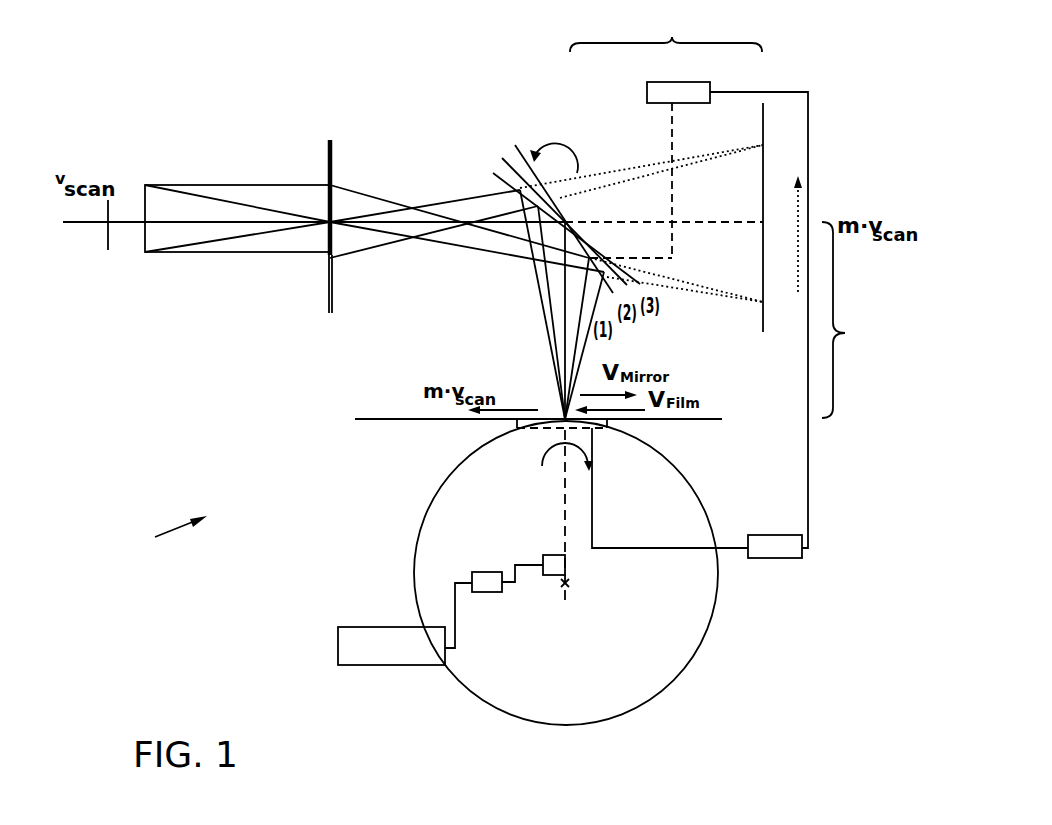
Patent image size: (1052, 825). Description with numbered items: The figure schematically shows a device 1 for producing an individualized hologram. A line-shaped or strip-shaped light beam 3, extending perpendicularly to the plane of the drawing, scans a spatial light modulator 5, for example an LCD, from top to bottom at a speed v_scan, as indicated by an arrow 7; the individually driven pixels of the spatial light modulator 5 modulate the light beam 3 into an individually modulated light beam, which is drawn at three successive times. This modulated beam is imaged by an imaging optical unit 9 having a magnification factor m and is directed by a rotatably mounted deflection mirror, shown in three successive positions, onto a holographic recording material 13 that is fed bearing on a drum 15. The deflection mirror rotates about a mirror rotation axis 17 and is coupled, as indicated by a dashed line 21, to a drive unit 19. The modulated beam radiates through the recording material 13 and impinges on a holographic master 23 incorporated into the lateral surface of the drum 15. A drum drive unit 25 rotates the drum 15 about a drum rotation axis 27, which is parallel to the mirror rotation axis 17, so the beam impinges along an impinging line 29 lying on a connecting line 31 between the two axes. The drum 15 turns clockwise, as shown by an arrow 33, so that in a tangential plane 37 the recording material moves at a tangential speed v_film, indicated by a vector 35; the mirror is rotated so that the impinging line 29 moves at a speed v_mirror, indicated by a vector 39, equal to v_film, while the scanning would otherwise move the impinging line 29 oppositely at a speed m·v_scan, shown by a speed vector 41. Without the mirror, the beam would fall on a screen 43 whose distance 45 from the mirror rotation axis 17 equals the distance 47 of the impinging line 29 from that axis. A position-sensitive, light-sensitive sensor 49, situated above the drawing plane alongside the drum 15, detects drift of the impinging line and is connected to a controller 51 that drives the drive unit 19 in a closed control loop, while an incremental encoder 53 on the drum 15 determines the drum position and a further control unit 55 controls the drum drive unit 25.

The device for producing an individualized hologram 1 is at (172, 534).
The light beam 3 is at (192, 260).
The spatial light modulator 5 is at (229, 181).
The arrow 7 is at (106, 236).
The imaging optical unit 9 is at (328, 314).
The holographic recording material 13 is at (486, 431).
The drum 15 is at (445, 510).
The mirror rotation axis 17 is at (566, 221).
The drive unit 19 is at (695, 88).
The dashed line 21 is at (673, 197).
The holographic master 23 is at (501, 437).
The drum drive unit 25 is at (412, 656).
The drum rotation axis 27 is at (570, 583).
The impinging line 29 is at (550, 400).
The connecting line 31 is at (567, 520).
The arrow 33 is at (555, 489).
The vector 35 is at (618, 424).
The tangential plane 37 is at (708, 420).
The vector 39 is at (618, 363).
The speed vector 41 is at (523, 409).
The screen 43 is at (764, 332).
The distance 45 is at (666, 26).
The distance 47 is at (832, 297).
The position-sensitive, light-sensitive sensor 49 is at (585, 425).
The controller 51 is at (784, 558).
The incremental encoder 53 is at (552, 576).
The further control unit 55 is at (483, 593).